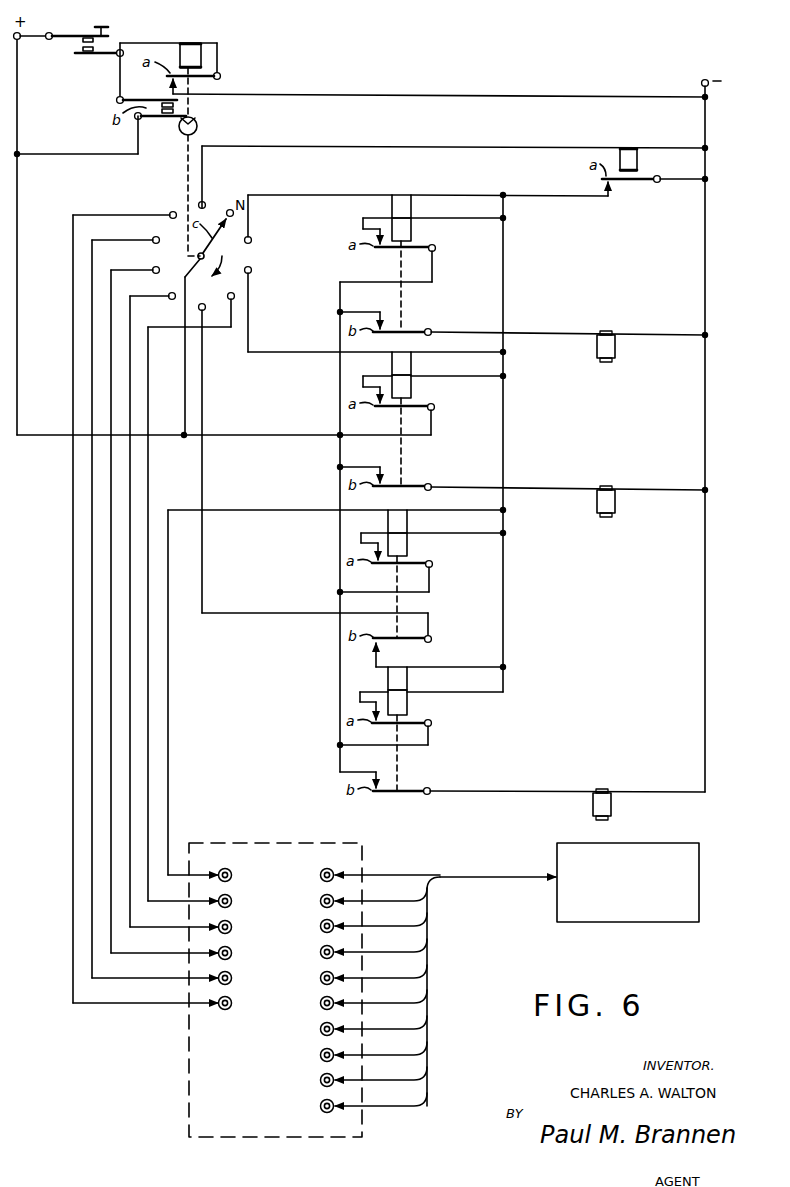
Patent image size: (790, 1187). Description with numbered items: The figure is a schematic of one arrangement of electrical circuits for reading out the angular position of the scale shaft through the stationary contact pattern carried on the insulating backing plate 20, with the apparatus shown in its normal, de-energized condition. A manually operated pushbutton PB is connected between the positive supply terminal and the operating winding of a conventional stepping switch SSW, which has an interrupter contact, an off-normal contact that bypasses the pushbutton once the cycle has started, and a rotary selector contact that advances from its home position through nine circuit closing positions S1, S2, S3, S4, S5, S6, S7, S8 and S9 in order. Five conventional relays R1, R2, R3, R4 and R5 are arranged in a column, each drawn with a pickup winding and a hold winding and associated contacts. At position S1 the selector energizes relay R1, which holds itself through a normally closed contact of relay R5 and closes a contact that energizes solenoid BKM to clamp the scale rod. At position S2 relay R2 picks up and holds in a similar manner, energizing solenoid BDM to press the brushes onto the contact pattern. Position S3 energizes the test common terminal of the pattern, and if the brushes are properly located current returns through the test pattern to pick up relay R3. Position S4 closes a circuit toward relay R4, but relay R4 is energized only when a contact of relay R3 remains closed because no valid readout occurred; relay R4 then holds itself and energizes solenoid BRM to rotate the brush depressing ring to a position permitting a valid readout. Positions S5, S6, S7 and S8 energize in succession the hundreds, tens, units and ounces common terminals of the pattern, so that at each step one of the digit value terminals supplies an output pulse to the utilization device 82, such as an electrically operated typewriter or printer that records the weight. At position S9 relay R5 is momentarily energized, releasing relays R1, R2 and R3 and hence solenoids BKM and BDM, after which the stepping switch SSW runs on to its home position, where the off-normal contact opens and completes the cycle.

The backing plate 20 is at (189, 1043).
The utilization device 82 is at (557, 914).
The pushbutton PB is at (73, 35).
The stepping switch SSW is at (186, 43).
The relay R1 is at (393, 195).
The relay R2 is at (411, 353).
The relay R3 is at (407, 511).
The relay R4 is at (407, 668).
The relay R5 is at (623, 147).
The first circuit closing position S1 is at (258, 234).
The second circuit closing position S2 is at (258, 263).
The third circuit closing position S3 is at (221, 289).
The fourth circuit closing position S4 is at (211, 308).
The fifth circuit closing position S5 is at (161, 289).
The sixth circuit closing position S6 is at (146, 263).
The seventh circuit closing position S7 is at (147, 233).
The eighth circuit closing position S8 is at (163, 208).
The ninth circuit closing position S9 is at (211, 197).
The solenoid BKM is at (615, 352).
The solenoid BDM is at (615, 503).
The solenoid BRM is at (611, 800).